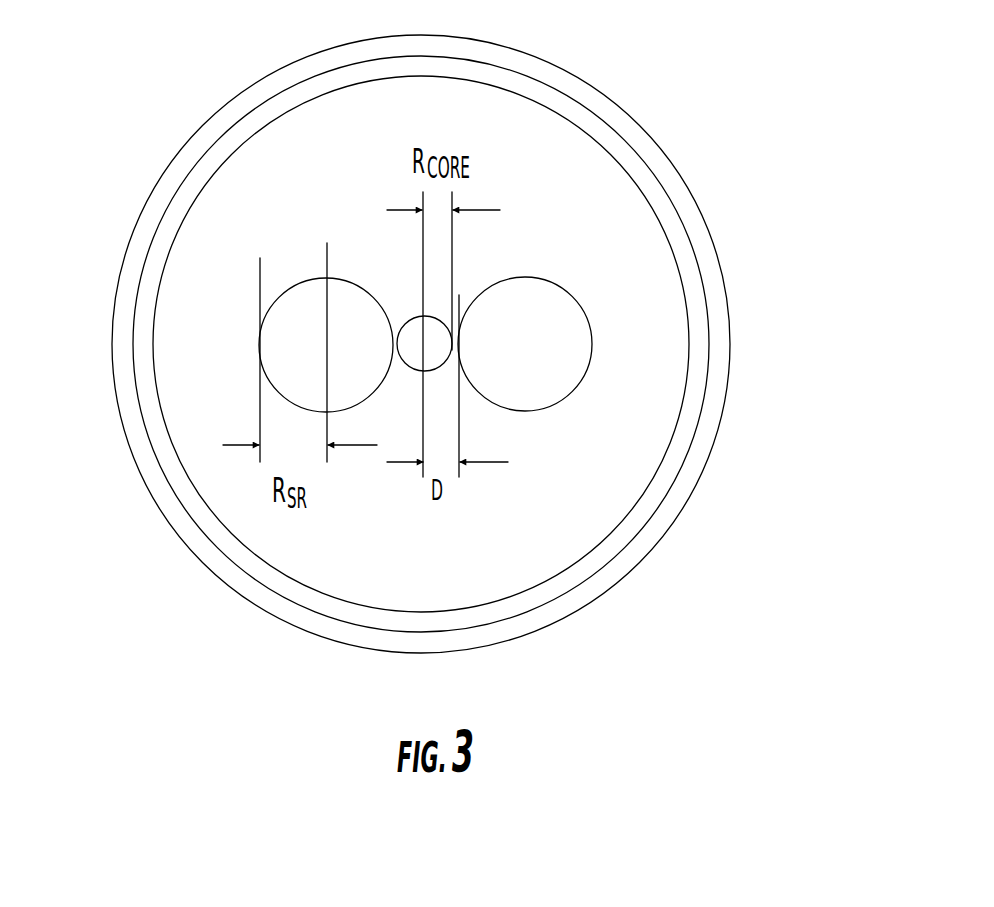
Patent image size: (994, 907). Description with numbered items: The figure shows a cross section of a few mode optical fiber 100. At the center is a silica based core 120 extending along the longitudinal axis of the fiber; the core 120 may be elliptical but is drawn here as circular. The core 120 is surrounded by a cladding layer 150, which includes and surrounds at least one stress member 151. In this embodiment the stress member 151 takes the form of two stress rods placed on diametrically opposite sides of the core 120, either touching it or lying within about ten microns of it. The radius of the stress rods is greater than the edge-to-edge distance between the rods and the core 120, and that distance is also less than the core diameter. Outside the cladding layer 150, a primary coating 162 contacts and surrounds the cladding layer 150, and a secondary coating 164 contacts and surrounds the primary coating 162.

The optical fiber 100 is at (706, 125).
The core 120 is at (417, 317).
The cladding layer 150 is at (178, 297).
The stress member 151 is at (292, 356).
The primary coating 162 is at (160, 442).
The secondary coating 164 is at (177, 512).